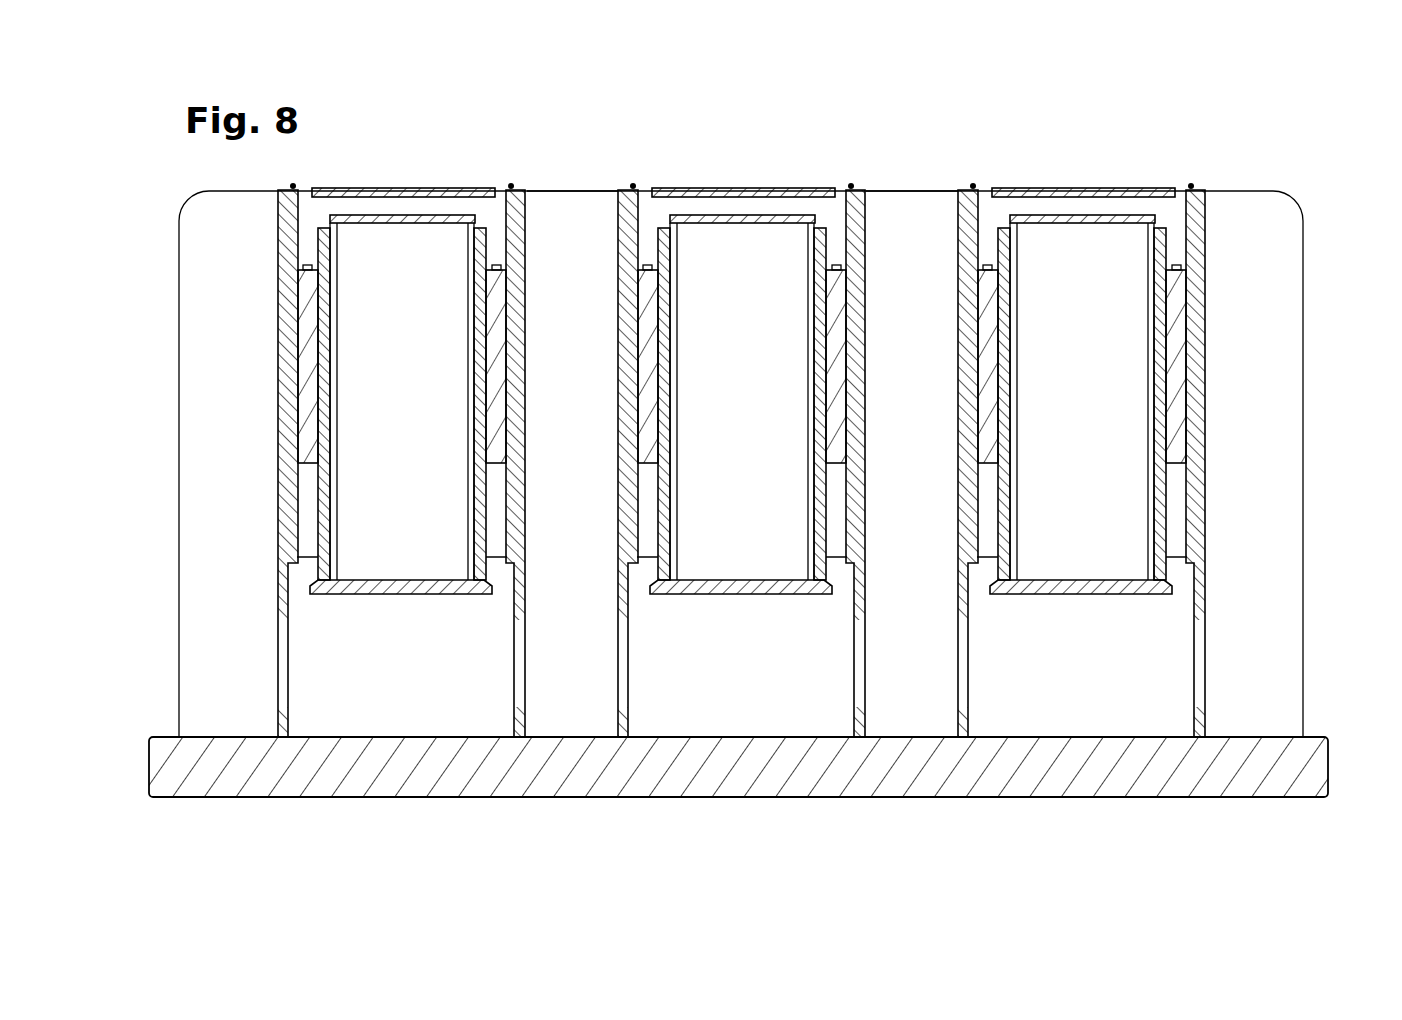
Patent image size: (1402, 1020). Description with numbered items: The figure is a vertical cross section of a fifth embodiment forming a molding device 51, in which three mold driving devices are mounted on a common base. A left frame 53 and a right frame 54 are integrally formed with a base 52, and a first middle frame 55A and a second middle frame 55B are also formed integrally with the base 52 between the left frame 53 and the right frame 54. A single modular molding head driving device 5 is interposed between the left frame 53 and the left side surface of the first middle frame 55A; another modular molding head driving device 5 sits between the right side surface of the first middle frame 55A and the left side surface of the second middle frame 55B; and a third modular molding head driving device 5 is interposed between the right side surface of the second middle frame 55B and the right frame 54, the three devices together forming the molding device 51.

The modular molding head driving device 5 is at (394, 167).
The molding device 51 is at (732, 452).
The base 52 is at (268, 775).
The left frame 53 is at (195, 593).
The right frame 54 is at (1280, 595).
The first middle frame 55A is at (572, 203).
The second middle frame 55B is at (910, 203).